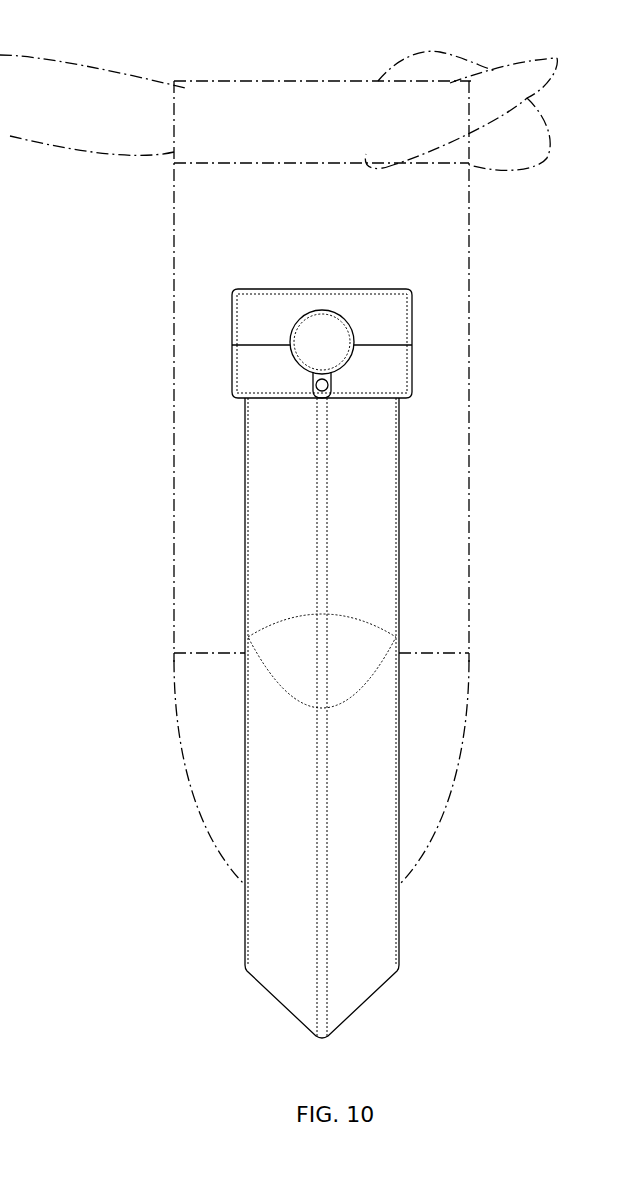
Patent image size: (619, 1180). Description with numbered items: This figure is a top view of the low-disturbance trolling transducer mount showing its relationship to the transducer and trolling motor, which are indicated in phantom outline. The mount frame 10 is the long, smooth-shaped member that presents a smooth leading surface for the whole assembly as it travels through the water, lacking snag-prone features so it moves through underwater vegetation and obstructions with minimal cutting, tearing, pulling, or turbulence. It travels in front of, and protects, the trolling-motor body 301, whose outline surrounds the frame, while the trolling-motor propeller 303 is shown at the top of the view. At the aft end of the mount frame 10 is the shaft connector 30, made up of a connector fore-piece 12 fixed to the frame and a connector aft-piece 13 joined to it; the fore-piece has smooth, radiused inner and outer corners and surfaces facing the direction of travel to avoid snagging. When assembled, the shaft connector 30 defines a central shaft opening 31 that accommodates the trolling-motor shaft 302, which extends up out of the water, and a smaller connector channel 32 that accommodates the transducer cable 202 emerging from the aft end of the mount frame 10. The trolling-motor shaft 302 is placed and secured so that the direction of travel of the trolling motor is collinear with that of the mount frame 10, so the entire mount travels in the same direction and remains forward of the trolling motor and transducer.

The mount frame 10 is at (262, 688).
The connector fore-piece 12 is at (247, 370).
The connector aft-piece 13 is at (247, 312).
The shaft connector 30 is at (307, 344).
The shaft opening 31 is at (318, 330).
The connector channel 32 is at (312, 386).
The transducer cable 202 is at (330, 384).
The trolling-motor body 301 is at (185, 453).
The trolling-motor shaft 302 is at (345, 318).
The trolling-motor propeller 303 is at (141, 147).